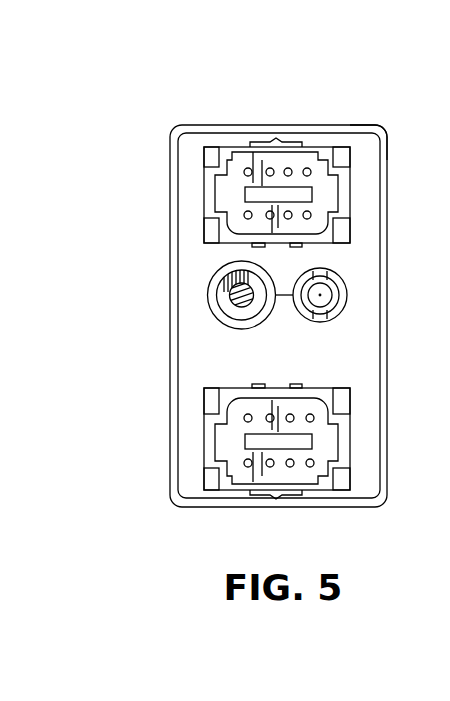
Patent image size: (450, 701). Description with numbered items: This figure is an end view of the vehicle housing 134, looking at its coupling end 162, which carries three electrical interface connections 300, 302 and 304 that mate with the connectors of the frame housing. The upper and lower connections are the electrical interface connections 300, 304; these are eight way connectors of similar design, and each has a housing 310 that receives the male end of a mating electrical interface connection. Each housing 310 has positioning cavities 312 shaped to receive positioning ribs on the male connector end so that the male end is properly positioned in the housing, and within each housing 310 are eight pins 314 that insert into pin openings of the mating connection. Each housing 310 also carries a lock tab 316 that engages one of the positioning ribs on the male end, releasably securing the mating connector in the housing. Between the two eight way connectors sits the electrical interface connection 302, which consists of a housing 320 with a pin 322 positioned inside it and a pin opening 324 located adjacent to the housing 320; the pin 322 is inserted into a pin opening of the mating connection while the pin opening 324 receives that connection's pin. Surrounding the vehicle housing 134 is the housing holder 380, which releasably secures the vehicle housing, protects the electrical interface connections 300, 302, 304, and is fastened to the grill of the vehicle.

The vehicle housing 134 is at (177, 212).
The coupling end 162 is at (370, 127).
The electrical interface connection 300 is at (203, 182).
The electrical interface connection 302 is at (210, 275).
The electrical interface connection 304 is at (205, 453).
The housing 310 is at (323, 150).
The positioning cavities 312 is at (229, 152).
The pins 314 is at (293, 217).
The lock tab 316 is at (276, 140).
The housing 320 is at (210, 312).
The pin 322 is at (232, 296).
The pin opening 324 is at (240, 315).
The housing holder 380 is at (197, 128).